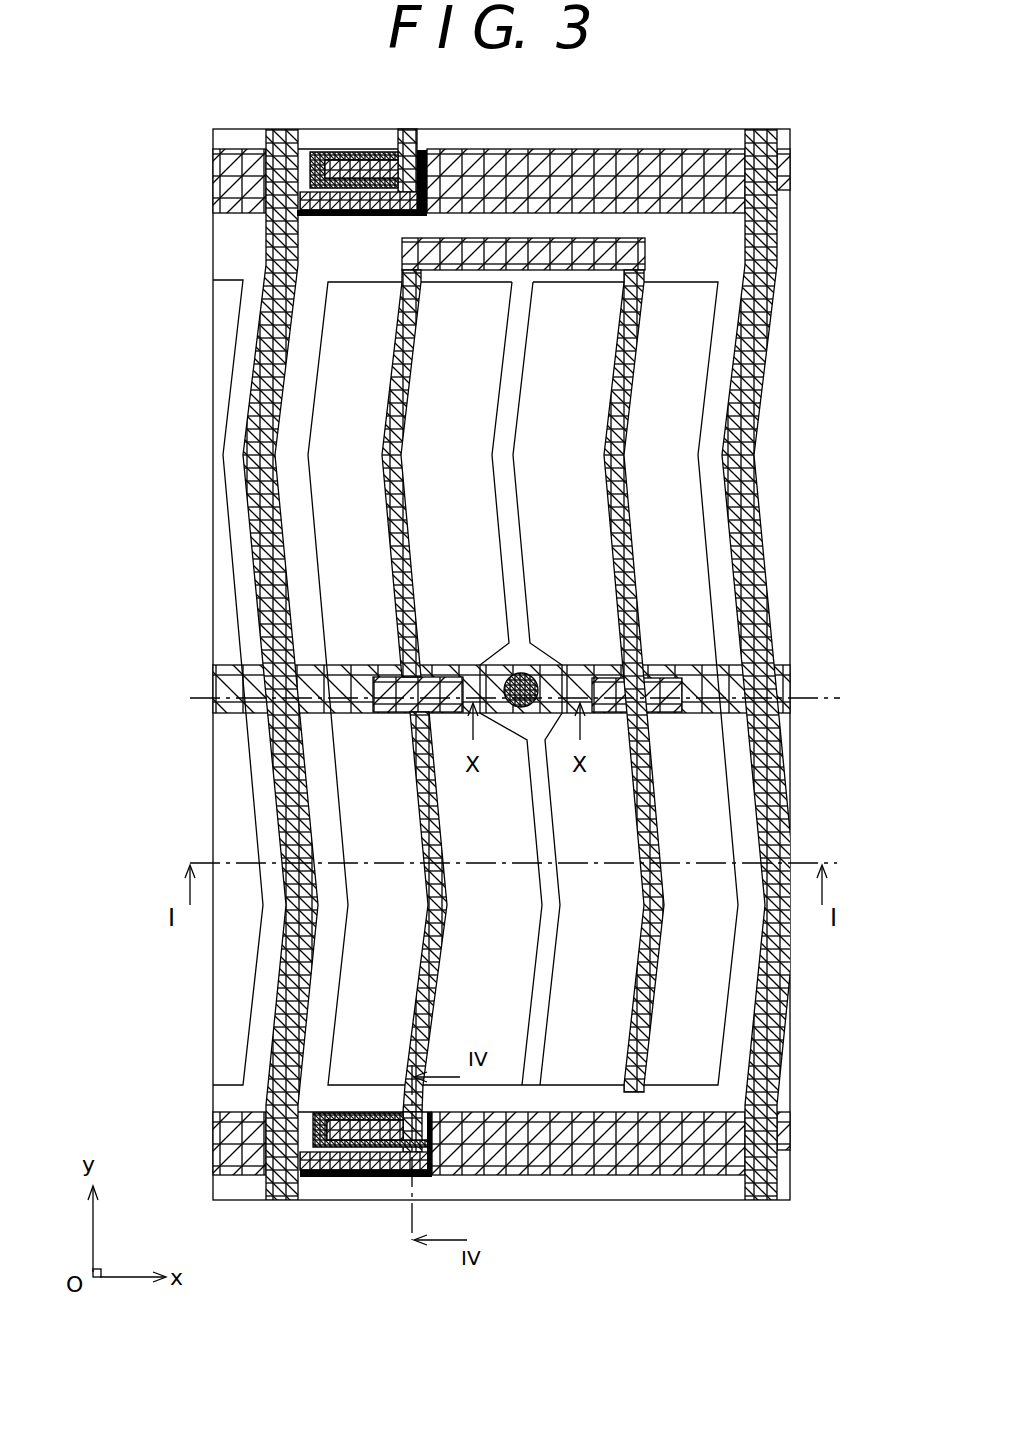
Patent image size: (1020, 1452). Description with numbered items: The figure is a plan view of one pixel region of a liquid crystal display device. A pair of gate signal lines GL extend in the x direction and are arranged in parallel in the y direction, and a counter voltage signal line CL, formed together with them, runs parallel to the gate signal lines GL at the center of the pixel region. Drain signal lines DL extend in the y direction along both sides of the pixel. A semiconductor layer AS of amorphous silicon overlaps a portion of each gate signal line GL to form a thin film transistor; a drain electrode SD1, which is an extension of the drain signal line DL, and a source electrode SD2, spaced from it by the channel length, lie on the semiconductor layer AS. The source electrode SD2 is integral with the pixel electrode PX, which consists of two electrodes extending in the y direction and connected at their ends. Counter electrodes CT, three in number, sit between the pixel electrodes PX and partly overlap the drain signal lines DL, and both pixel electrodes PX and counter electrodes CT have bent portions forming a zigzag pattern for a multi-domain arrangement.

The gate signal line GL is at (787, 165).
The drain signal line DL is at (275, 605).
The counter voltage signal line CL is at (790, 682).
The counter electrode CT is at (703, 410).
The pixel electrode PX is at (420, 791).
The drain electrode SD1 is at (375, 1178).
The source electrode SD2 is at (322, 1126).
The semiconductor layer AS is at (430, 1133).